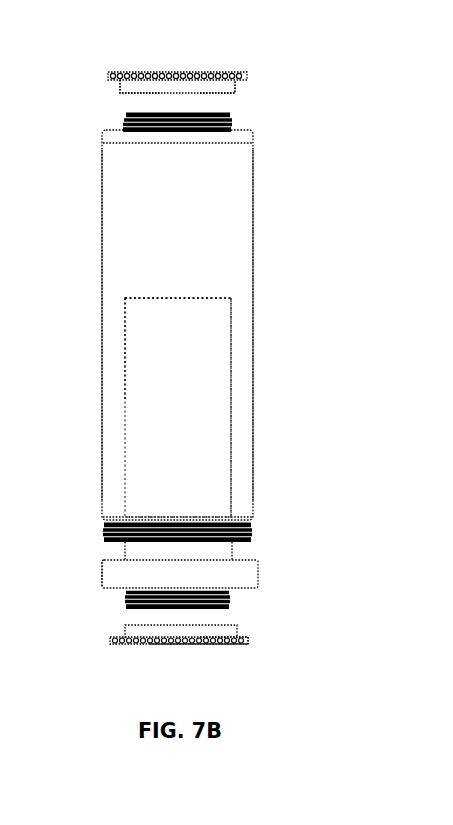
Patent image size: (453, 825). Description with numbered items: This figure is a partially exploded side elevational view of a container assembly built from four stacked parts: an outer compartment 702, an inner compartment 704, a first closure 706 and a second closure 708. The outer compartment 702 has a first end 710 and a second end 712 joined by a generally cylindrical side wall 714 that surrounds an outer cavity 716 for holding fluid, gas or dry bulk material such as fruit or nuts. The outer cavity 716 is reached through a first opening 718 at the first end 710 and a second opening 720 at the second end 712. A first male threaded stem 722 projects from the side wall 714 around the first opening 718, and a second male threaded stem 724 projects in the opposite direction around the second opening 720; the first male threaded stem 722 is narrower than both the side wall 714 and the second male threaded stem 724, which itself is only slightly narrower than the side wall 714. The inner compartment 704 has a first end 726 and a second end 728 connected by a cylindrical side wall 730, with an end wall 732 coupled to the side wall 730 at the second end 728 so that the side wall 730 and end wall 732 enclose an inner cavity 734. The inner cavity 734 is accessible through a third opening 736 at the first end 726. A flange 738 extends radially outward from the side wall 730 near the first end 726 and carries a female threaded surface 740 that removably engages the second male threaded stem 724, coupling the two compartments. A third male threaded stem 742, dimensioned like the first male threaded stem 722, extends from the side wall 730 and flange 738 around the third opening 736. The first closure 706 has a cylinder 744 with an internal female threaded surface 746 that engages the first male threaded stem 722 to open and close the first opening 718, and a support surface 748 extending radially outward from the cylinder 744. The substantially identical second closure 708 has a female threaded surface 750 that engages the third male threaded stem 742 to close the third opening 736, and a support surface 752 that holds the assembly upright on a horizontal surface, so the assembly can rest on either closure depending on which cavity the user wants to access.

The outer compartment 702 is at (232, 210).
The inner compartment 704 is at (250, 580).
The first closure 706 is at (226, 72).
The second closure 708 is at (245, 643).
The first end 710 is at (229, 116).
The second end 712 is at (253, 547).
The side wall 714 is at (113, 222).
The outer cavity 716 is at (235, 275).
The first opening 718 is at (125, 115).
The second opening 720 is at (125, 543).
The first male threaded stem 722 is at (231, 122).
The second male threaded stem 724 is at (250, 527).
The first end 726 is at (125, 612).
The second end 728 is at (160, 298).
The side wall 730 is at (230, 400).
The end wall 732 is at (180, 298).
The inner cavity 734 is at (128, 408).
The third opening 736 is at (237, 625).
The flange 738 is at (103, 588).
The female threaded surface 740 is at (125, 558).
The third male threaded stem 742 is at (235, 604).
The cylinder 744 is at (235, 89).
The female threaded surface 746 is at (120, 93).
The support surface 748 is at (148, 72).
The female threaded surface 750 is at (142, 612).
The support surface 752 is at (214, 643).